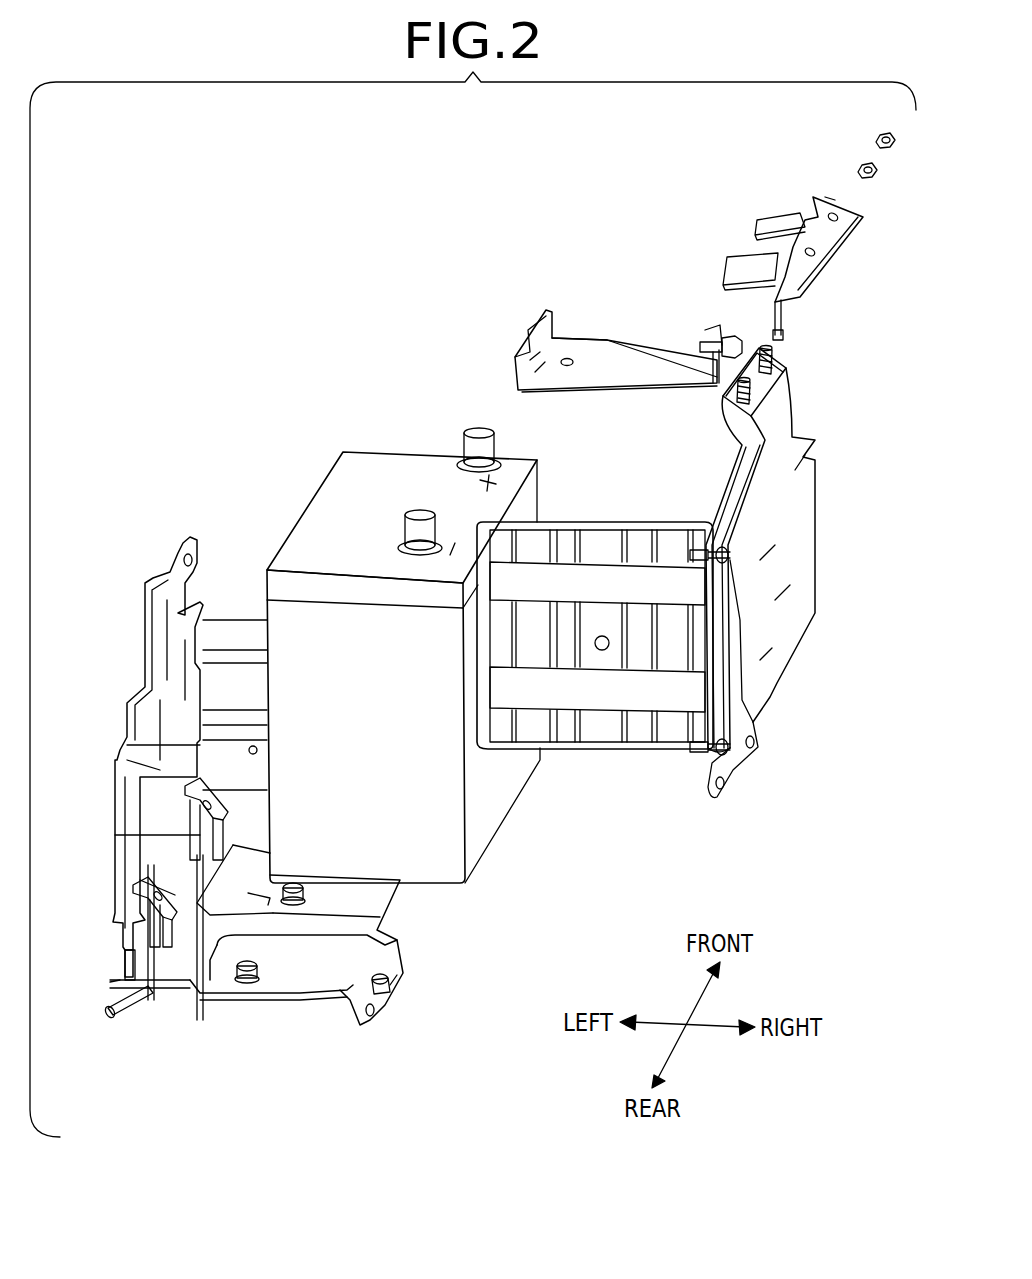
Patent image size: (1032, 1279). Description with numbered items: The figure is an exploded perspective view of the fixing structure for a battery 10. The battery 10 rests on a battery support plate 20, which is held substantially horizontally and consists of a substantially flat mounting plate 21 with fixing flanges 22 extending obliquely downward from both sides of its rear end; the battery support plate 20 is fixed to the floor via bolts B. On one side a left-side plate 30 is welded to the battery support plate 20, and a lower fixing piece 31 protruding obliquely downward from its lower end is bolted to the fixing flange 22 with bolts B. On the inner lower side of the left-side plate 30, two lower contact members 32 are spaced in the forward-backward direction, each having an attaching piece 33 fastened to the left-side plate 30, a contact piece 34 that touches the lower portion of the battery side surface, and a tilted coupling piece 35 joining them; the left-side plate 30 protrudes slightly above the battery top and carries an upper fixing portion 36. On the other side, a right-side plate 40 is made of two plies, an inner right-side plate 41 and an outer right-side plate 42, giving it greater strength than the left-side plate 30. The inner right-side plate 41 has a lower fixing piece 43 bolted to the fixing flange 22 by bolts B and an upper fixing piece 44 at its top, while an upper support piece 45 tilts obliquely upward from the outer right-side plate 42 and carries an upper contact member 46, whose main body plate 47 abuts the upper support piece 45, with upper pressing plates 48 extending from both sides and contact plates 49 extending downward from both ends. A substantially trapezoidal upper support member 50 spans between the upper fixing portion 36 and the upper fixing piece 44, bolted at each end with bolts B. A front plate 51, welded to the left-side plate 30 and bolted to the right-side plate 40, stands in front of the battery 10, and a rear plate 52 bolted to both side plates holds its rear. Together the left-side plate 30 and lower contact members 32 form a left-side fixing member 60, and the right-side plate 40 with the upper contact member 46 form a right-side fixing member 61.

The battery 10 is at (385, 465).
The battery support plate 20 is at (259, 975).
The mounting plate 21 is at (365, 893).
The fixing flange 22 is at (120, 1015).
The left-side plate 30 is at (150, 710).
The lower fixing piece 31 is at (113, 1005).
The lower contact member 32 is at (127, 760).
The attaching piece 33 is at (127, 745).
The contact piece 34 is at (152, 1003).
The coupling piece 35 is at (255, 780).
The upper fixing portion 36 is at (190, 537).
The right-side plate 40 is at (768, 593).
The inner right-side plate 41 is at (698, 700).
The outer right-side plate 42 is at (780, 637).
The lower fixing piece 43 is at (728, 770).
The upper fixing piece 44 is at (723, 404).
The upper support piece 45 is at (745, 432).
The upper contact member 46 is at (823, 190).
The main body plate 47 is at (822, 270).
The upper pressing plate 48 is at (770, 220).
The contact plate 49 is at (740, 320).
The upper support member 50 is at (597, 360).
The front plate 51 is at (235, 633).
The rear plate 52 is at (606, 742).
The left-side fixing member 60 is at (179, 780).
The right-side fixing member 61 is at (880, 275).
The bolt B is at (747, 350).